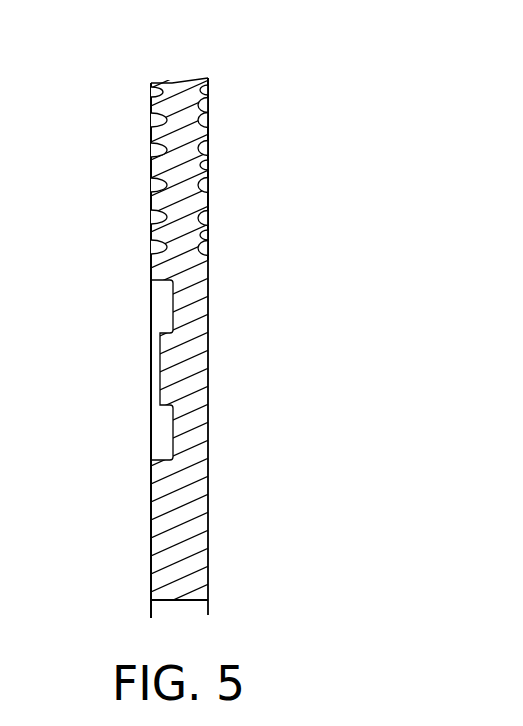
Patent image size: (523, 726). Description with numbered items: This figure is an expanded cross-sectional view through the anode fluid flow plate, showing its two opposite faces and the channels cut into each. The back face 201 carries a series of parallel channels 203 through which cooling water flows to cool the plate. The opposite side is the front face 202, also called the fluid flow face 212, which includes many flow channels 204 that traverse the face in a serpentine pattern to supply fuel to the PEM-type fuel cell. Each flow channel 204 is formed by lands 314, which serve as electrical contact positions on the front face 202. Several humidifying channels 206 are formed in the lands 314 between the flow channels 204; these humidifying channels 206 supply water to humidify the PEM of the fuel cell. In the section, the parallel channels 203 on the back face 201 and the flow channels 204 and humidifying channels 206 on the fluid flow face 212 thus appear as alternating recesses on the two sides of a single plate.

The back face 201 is at (150, 587).
The front face 202 is at (210, 552).
The parallel channels 203 is at (163, 186).
The flow channel 204 is at (208, 185).
The humidifying channel 206 is at (208, 168).
The fluid flow face 212 is at (221, 99).
The lands 314 is at (208, 133).